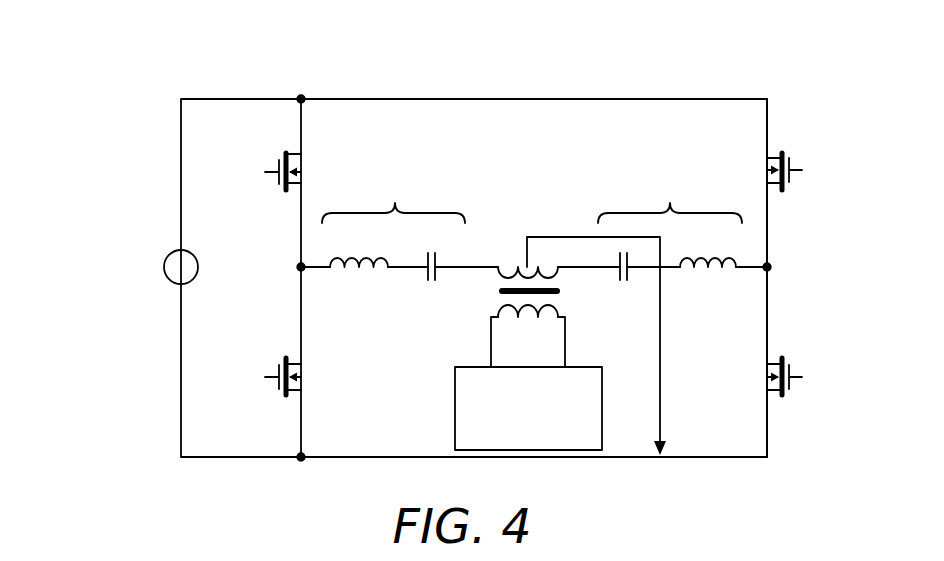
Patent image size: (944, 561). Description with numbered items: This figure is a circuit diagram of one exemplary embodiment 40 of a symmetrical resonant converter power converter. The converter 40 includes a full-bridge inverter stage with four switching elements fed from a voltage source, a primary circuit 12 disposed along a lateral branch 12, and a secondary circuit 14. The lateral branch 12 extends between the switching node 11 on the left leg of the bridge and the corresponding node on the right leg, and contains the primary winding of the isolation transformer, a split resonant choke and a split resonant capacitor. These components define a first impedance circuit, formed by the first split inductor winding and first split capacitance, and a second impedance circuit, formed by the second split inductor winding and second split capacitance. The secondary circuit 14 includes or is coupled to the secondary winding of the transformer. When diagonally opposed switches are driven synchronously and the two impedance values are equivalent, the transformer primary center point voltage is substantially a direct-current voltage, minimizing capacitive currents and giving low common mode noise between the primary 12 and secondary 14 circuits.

The symmetrical resonant converter 40 is at (121, 73).
The first switching node 11 is at (299, 264).
The primary circuit 12 is at (514, 125).
The secondary circuit 14 is at (455, 408).